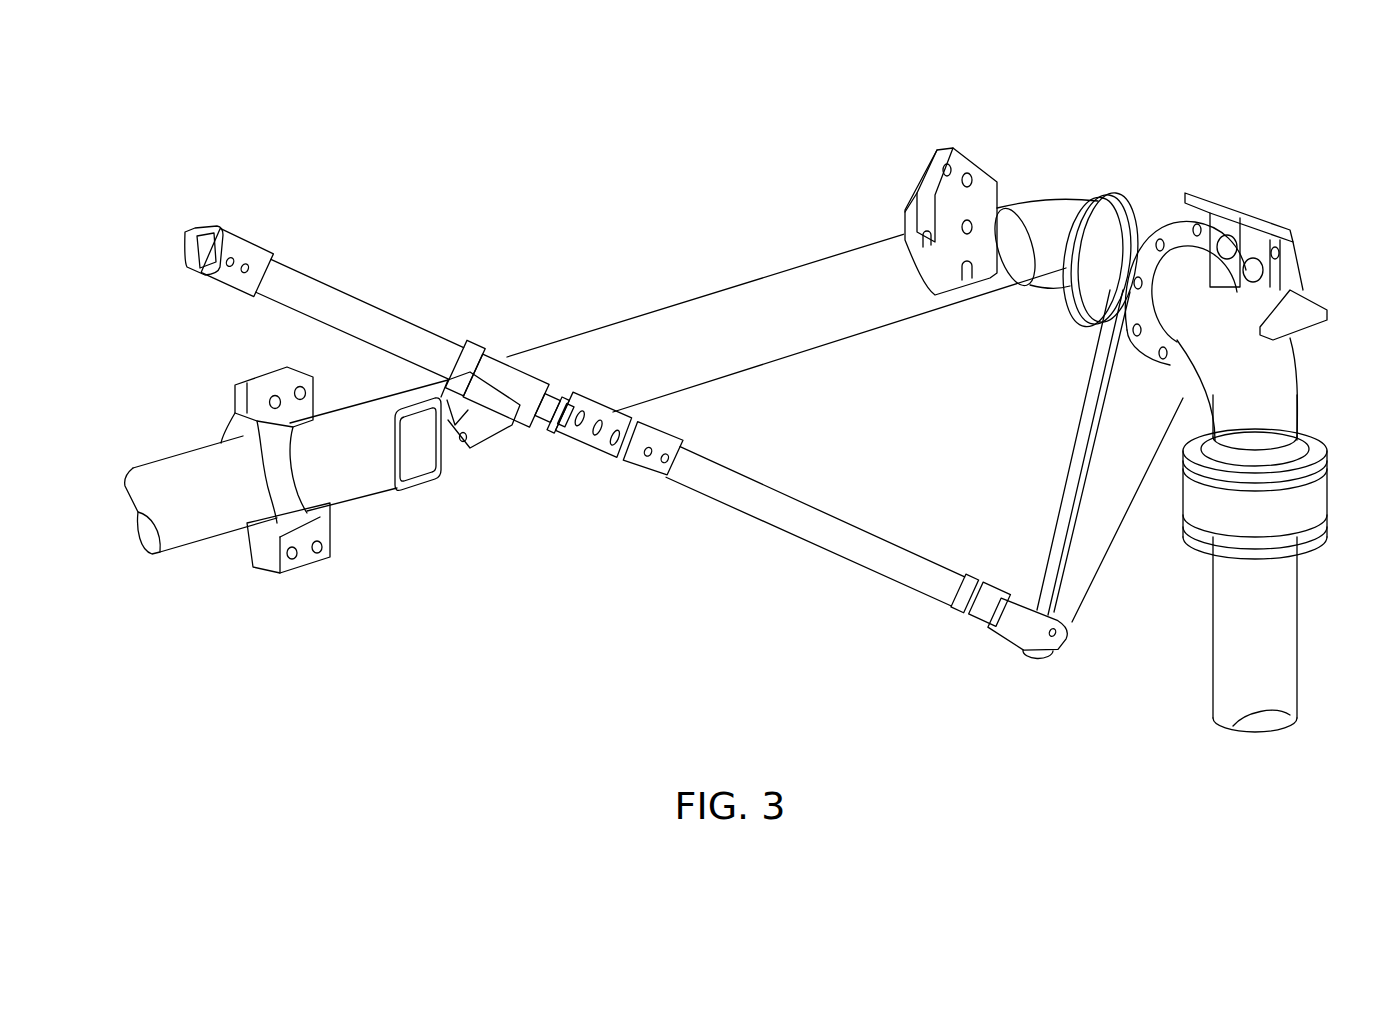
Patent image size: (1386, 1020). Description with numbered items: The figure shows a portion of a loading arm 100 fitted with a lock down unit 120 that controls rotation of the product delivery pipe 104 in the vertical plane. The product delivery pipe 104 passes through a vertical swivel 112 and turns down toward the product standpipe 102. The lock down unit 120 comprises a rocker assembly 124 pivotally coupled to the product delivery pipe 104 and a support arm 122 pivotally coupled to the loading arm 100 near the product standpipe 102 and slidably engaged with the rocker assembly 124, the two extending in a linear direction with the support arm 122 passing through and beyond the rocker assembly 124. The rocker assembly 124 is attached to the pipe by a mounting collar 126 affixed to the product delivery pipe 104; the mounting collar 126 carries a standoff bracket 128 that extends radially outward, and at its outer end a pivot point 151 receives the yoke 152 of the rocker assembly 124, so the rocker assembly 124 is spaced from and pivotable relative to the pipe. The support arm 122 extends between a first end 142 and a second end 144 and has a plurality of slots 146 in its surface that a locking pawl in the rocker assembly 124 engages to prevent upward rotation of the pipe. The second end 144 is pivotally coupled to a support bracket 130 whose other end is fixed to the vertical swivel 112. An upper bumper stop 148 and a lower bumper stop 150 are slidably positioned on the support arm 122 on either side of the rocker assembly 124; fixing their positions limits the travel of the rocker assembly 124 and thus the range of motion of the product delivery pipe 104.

The loading arm 100 is at (888, 148).
The product standpipe 102 is at (1298, 627).
The product delivery pipe 104 is at (712, 292).
The vertical swivel 112 is at (1144, 216).
The lock down unit 120 is at (653, 580).
The support arm 122 is at (837, 561).
The rocker assembly 124 is at (500, 347).
The mounting collar 126 is at (236, 402).
The standoff bracket 128 is at (373, 495).
The support bracket 130 is at (1078, 435).
The first end 142 is at (194, 228).
The second end 144 is at (1024, 653).
The slots 146 is at (584, 428).
The upper bumper stop 148 is at (250, 240).
The lower bumper stop 150 is at (678, 442).
The pivot point 151 is at (447, 452).
The yoke 152 is at (490, 428).